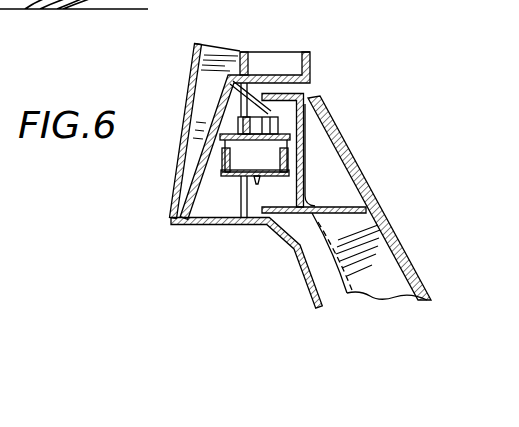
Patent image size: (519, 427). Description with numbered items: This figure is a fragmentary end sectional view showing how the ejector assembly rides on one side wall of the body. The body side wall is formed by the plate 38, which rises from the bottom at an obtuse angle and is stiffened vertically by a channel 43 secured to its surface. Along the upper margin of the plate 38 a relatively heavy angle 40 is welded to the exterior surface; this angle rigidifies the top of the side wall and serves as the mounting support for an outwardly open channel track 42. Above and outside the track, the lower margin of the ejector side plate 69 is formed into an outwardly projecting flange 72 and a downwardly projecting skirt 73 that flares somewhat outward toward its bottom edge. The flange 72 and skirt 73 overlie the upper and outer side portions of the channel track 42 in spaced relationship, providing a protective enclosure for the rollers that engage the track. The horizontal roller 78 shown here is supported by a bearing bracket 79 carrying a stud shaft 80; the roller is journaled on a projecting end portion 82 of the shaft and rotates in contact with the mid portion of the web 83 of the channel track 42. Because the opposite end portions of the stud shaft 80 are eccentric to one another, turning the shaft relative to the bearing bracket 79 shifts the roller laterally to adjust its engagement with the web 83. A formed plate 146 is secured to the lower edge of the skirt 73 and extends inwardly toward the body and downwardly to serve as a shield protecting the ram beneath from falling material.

The flange 72 is at (246, 80).
The side plate 69 is at (312, 57).
The skirt 73 is at (181, 157).
The bearing bracket 79 is at (226, 110).
The stud shaft 80 is at (318, 115).
The channel track 42 is at (303, 140).
The web 83 is at (303, 170).
The angle 40 is at (338, 204).
The side plate 38 is at (393, 242).
The channel 43 is at (392, 275).
The formed plate 146 is at (190, 222).
The horizontal roller 78 is at (285, 173).
The projecting end portion 82 is at (240, 173).